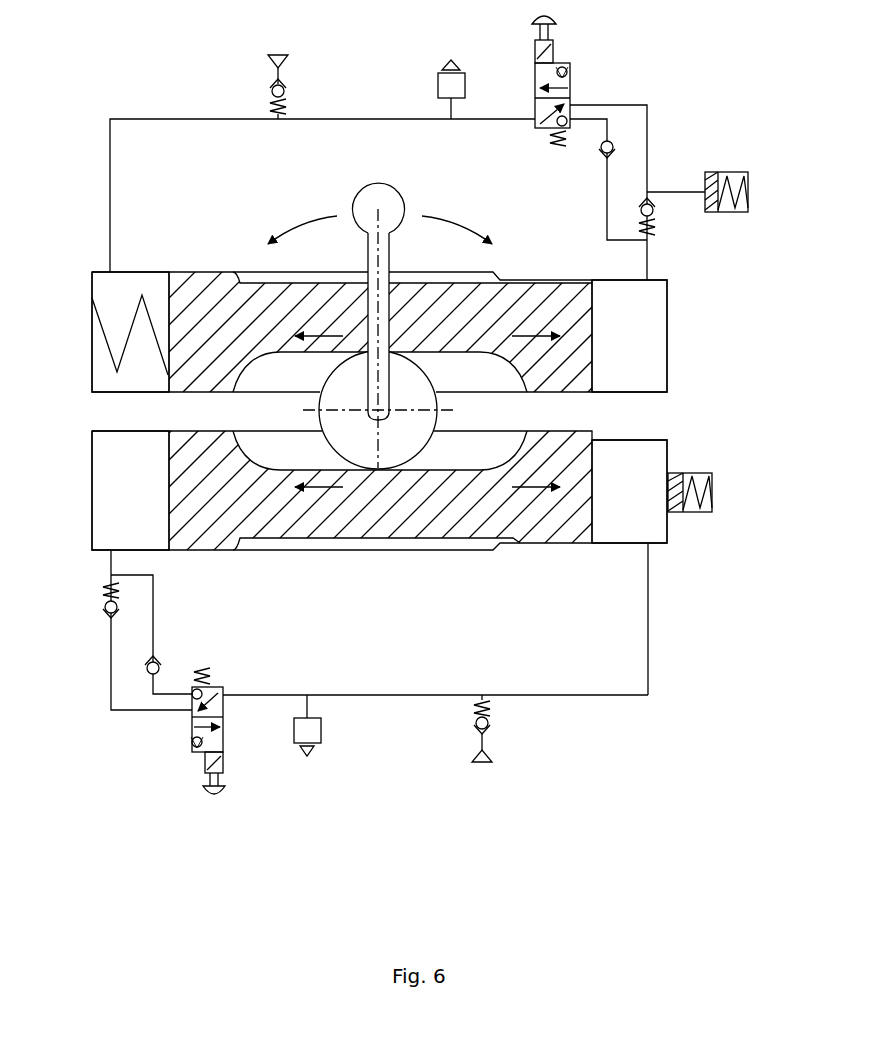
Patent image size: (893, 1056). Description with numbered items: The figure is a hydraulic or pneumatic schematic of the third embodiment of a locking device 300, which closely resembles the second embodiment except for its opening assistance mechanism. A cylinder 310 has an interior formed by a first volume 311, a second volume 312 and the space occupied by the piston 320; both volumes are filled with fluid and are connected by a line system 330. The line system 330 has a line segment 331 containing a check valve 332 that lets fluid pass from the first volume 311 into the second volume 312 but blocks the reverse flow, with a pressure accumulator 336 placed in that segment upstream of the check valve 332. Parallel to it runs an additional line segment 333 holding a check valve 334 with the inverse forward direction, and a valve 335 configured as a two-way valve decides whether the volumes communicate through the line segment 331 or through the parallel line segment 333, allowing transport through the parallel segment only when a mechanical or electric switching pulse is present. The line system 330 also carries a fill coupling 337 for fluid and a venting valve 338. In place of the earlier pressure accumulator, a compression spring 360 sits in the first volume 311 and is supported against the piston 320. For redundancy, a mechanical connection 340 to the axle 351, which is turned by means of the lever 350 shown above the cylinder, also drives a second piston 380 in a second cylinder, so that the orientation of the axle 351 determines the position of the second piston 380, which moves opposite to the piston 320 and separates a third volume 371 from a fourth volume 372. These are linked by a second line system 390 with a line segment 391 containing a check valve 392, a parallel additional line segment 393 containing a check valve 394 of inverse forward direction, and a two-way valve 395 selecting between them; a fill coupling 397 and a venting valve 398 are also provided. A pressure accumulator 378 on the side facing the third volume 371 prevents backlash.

The locking device 300 is at (402, 812).
The cylinder 310 is at (245, 270).
The first volume 311 is at (92, 270).
The second volume 312 is at (667, 338).
The piston 320 is at (585, 367).
The line system 330 is at (170, 119).
The line segment 331 is at (625, 105).
The check valve 332 is at (653, 213).
The additional line segment 333 is at (587, 119).
The check valve 334 is at (613, 145).
The valve 335 is at (555, 55).
The pressure accumulator 336 is at (728, 172).
The fill coupling 337 is at (270, 80).
The venting valve 338 is at (438, 80).
The mechanical connection 340 is at (425, 397).
The actuating lever 350 is at (372, 200).
The axle 351 is at (437, 433).
The compression spring 360 is at (92, 340).
The third volume 371 is at (662, 527).
The fourth volume 372 is at (93, 548).
The pressure accumulator 378 is at (712, 510).
The second piston 380 is at (572, 537).
The second line system 390 is at (646, 698).
The line segment 391 is at (110, 676).
The check valve 392 is at (107, 612).
The additional line segment 393 is at (178, 699).
The check valve 394 is at (150, 695).
The valve 395 is at (225, 742).
The fill coupling 397 is at (490, 730).
The venting valve 398 is at (317, 728).